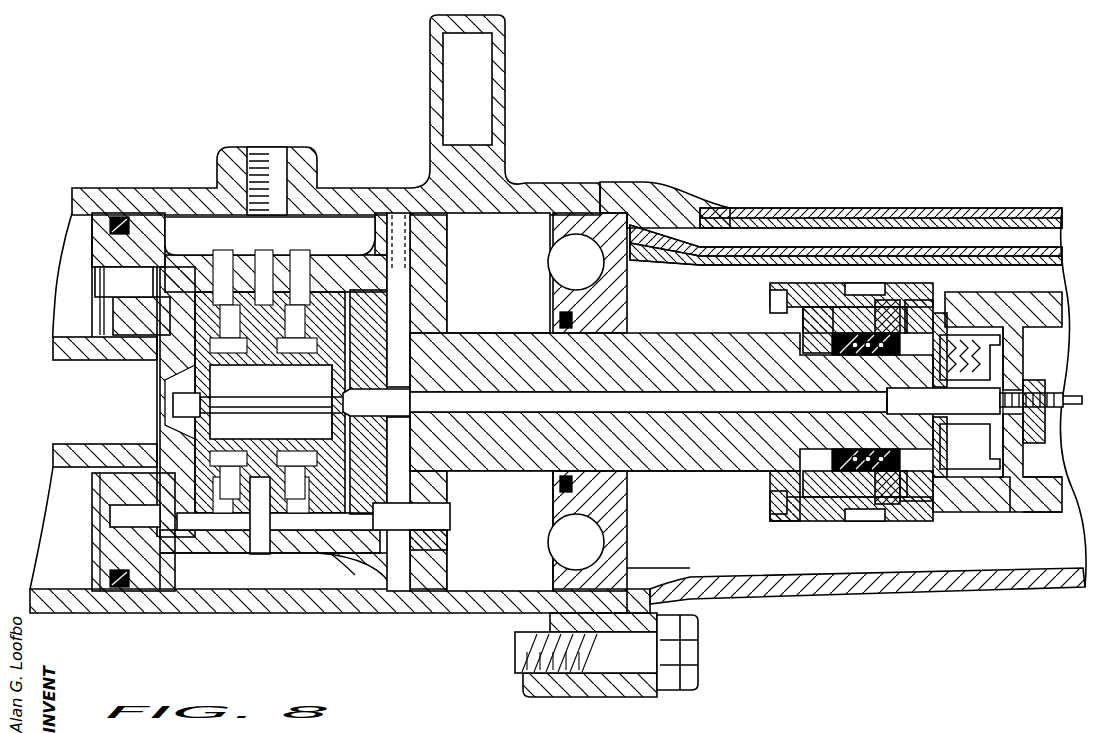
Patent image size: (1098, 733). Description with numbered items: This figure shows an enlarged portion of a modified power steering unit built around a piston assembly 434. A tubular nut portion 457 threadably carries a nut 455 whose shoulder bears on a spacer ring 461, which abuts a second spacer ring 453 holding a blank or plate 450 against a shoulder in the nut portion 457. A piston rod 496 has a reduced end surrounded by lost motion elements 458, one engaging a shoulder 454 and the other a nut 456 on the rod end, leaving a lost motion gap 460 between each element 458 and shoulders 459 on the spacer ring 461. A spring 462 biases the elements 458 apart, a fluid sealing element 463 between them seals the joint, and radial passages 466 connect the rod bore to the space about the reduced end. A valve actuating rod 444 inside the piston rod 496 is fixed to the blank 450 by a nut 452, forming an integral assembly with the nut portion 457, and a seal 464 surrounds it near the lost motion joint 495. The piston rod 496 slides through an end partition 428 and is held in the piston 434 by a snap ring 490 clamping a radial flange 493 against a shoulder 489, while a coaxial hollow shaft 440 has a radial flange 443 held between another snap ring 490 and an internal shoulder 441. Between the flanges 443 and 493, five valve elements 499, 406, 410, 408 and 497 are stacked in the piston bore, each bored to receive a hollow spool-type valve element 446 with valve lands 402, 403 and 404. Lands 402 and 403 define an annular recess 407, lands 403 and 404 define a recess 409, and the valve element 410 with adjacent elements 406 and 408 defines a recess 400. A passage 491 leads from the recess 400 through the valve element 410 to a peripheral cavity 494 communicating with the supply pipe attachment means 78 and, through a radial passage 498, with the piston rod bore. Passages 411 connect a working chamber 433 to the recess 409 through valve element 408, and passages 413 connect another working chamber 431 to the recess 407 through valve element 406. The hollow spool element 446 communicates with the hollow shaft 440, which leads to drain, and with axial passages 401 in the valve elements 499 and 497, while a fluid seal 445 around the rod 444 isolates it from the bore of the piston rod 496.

The supply pipe attachment means 78 is at (258, 188).
The annular recess 400 is at (266, 335).
The axial passages 401 is at (193, 323).
The peripheral valve land 402 is at (193, 443).
The peripheral valve land 403 is at (267, 440).
The peripheral valve land 404 is at (330, 458).
The circular valve element 406 is at (232, 298).
The annular recess 407 is at (213, 364).
The circular valve element 408 is at (312, 297).
The annular recess 409 is at (280, 345).
The circular valve element 410 is at (287, 300).
The passages 411 is at (317, 550).
The passages 413 is at (167, 553).
The end partition 428 is at (578, 260).
The working chamber 431 is at (75, 237).
The working chamber 433 is at (515, 506).
The piston assembly 434 is at (372, 245).
The hollow shaft 440 is at (62, 345).
The internal shoulder 441 is at (150, 272).
The radial flange 443 is at (110, 543).
The valve actuating rod 444 is at (695, 411).
The fluid seal 445 is at (343, 393).
The spool-type valve element 446 is at (342, 441).
The blank or plate 450 is at (1020, 360).
The nut 452 is at (1028, 430).
The second spacer ring 453 is at (1000, 503).
The shoulder 454 is at (800, 328).
The nut 455 is at (845, 518).
The nut 456 is at (973, 340).
The tubular nut portion 457 is at (1043, 510).
The lost motion elements 458 is at (813, 315).
The shoulders 459 is at (812, 340).
The lost motion gap 460 is at (918, 308).
The spacer ring 461 is at (903, 513).
The spring 462 is at (850, 354).
The fluid sealing element 463 is at (882, 372).
The seal 464 is at (977, 373).
The radial passages 466 is at (880, 354).
The shoulder 489 is at (355, 555).
The snap ring 490 is at (108, 535).
The passage 491 is at (265, 290).
The radial flange 493 is at (420, 535).
The peripheral cavity 494 is at (180, 250).
The lost motion joint 495 is at (996, 286).
The piston rod 496 is at (730, 478).
The circular valve element 497 is at (368, 292).
The radial passage 498 is at (408, 250).
The circular valve element 499 is at (192, 290).